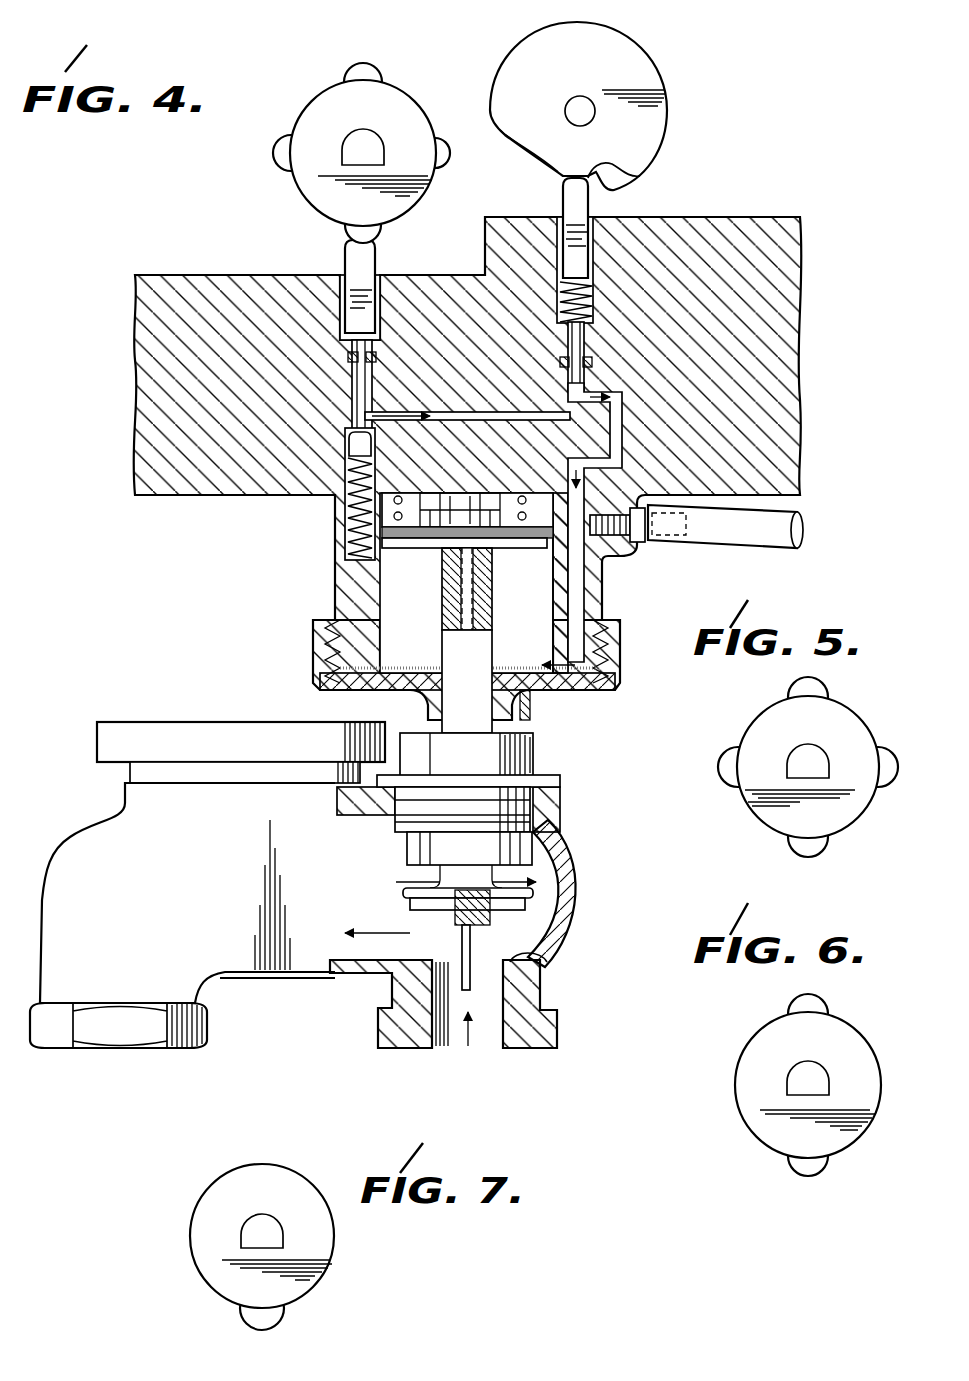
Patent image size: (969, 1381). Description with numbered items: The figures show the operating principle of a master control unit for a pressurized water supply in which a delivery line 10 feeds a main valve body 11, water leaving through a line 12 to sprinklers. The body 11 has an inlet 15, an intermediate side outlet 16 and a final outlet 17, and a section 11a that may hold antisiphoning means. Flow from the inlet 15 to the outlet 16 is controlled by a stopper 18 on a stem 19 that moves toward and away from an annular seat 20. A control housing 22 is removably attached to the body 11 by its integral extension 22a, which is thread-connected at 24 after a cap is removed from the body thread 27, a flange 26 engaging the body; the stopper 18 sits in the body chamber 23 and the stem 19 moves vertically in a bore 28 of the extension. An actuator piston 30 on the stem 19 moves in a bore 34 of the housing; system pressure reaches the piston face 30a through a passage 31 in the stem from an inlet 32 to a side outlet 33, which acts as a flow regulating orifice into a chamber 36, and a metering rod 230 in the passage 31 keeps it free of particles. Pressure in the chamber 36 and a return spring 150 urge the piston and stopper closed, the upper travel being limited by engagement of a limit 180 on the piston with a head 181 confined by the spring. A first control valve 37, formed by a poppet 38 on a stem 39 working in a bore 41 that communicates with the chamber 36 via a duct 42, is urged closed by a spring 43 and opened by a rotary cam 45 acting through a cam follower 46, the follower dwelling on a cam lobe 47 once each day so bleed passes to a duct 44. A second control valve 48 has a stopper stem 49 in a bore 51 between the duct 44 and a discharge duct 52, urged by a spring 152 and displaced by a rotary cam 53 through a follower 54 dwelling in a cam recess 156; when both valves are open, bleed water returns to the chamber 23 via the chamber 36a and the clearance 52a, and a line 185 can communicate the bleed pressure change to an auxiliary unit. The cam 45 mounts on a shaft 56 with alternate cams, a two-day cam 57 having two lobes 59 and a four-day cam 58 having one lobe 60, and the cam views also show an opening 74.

In FIG. 4, the pressurized water delivery line 10 is at (466, 1048).
In FIG. 4, the main valve body 11 is at (582, 880).
In FIG. 4, the body section 11a is at (66, 842).
In FIG. 4, the line 12 is at (120, 1058).
In FIG. 4, the inlet 15 is at (495, 1050).
In FIG. 4, the intermediate side outlet 16 is at (350, 978).
In FIG. 4, the final outlet 17 is at (190, 1022).
In FIG. 4, the stopper 18 is at (522, 920).
In FIG. 4, the stem 19 is at (442, 650).
In FIG. 4, the annular seat 20 is at (548, 960).
In FIG. 4, the control housing 22 is at (298, 576).
In FIG. 4, the housing extension 22a is at (540, 752).
In FIG. 4, the body chamber 23 is at (374, 913).
In FIG. 4, the thread connection 24 is at (515, 806).
In FIG. 4, the flange 26 is at (560, 782).
In FIG. 4, the body thread 27 is at (535, 829).
In FIG. 4, the bore 28 is at (450, 700).
In FIG. 4, the actuator piston 30 is at (532, 548).
In FIG. 4, the piston face 30a is at (392, 532).
In FIG. 4, the passage 31 is at (493, 602).
In FIG. 4, the inlet 32 is at (470, 942).
In FIG. 4, the outlet 33 is at (478, 493).
In FIG. 4, the bore 34 is at (555, 585).
In FIG. 4, the chamber 36 is at (555, 495).
In FIG. 4, the chamber 36a is at (432, 610).
In FIG. 4, the first control valve 37 is at (343, 436).
In FIG. 4, the poppet 38 is at (349, 449).
In FIG. 4, the stem 39 is at (358, 372).
In FIG. 4, the bore 41 is at (352, 480).
In FIG. 4, the duct 42 is at (352, 528).
In FIG. 4, the spring 43 is at (378, 508).
In FIG. 4, the duct 44 is at (470, 412).
In FIG. 4, the rotary cam 45 is at (318, 103).
In FIG. 5, the rotary cam 45 is at (808, 767).
In FIG. 4, the cam follower 46 is at (378, 280).
In FIG. 4, the cam lobe 47 is at (352, 233).
In FIG. 5, the cam lobe 47 is at (818, 690).
In FIG. 4, the second control valve 48 is at (588, 350).
In FIG. 4, the stopper stem 49 is at (572, 384).
In FIG. 4, the bore 51 is at (570, 340).
In FIG. 4, the discharge duct 52 is at (622, 414).
In FIG. 4, the clearance 52a is at (528, 710).
In FIG. 4, the rotary cam 53 is at (578, 106).
In FIG. 4, the cam follower 54 is at (588, 208).
In FIG. 4, the shaft 56 is at (372, 145).
In FIG. 6, the two-day cam 57 is at (808, 1085).
In FIG. 7, the four-day cam 58 is at (262, 1236).
In FIG. 6, the cam lobe 59 is at (828, 1006).
In FIG. 7, the cam lobe 60 is at (272, 1316).
In FIG. 4, the socket hole 74 is at (591, 122).
In FIG. 4, the return spring 150 is at (530, 496).
In FIG. 4, the spring 152 is at (594, 293).
In FIG. 4, the cam recess 156 is at (540, 170).
In FIG. 4, the limit 180 is at (445, 493).
In FIG. 4, the head 181 is at (430, 496).
In FIG. 4, the line 185 is at (780, 520).
In FIG. 4, the metering rod 230 is at (480, 622).